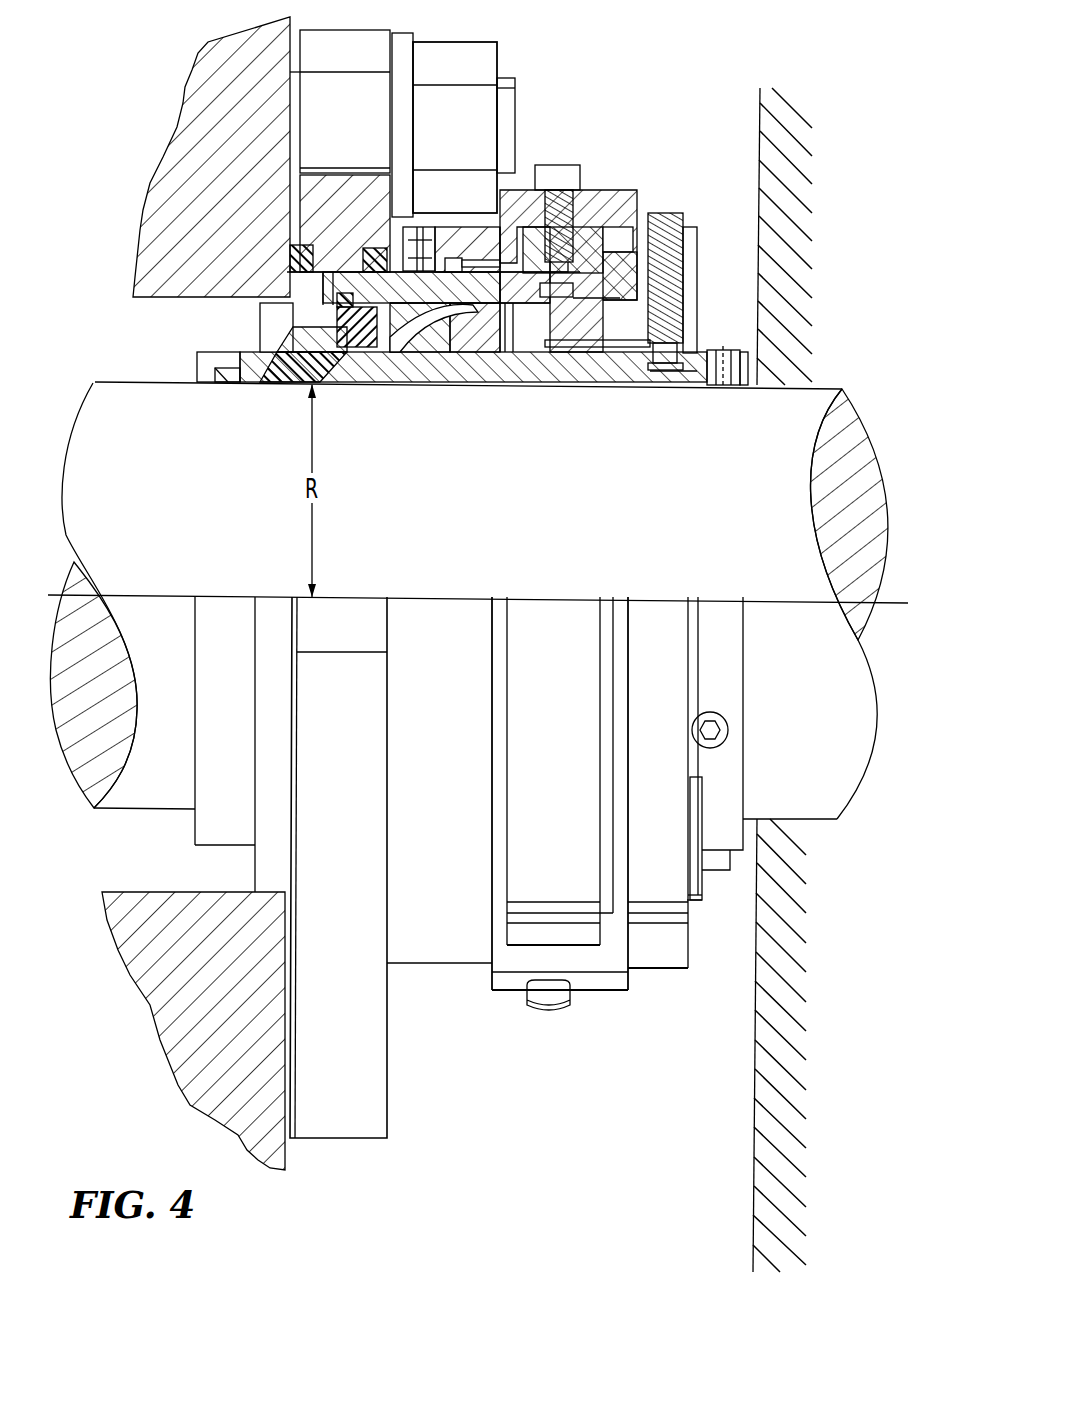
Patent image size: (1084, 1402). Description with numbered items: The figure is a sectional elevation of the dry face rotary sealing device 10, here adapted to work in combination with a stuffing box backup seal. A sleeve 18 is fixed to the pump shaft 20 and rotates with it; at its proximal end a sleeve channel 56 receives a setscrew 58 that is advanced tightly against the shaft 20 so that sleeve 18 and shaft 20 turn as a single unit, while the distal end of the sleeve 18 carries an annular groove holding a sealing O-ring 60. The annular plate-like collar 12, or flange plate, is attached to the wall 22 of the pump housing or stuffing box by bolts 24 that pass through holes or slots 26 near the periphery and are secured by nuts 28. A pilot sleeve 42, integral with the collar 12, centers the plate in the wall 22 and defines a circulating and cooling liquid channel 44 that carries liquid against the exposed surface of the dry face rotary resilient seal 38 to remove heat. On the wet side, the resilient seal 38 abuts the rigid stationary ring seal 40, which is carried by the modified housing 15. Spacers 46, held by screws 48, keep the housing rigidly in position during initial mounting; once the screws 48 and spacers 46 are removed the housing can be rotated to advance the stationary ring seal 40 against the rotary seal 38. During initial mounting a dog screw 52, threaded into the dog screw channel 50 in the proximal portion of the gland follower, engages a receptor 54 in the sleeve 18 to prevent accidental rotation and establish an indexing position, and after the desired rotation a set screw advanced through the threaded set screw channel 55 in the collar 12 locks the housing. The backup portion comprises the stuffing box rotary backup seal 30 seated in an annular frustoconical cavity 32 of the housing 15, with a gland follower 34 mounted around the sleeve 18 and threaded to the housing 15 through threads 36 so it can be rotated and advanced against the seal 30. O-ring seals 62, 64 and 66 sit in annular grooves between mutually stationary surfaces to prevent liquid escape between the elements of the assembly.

The dry face rotary sealing device 10 is at (482, 1030).
The annular plate-like collar 12 is at (312, 181).
The housing 15 is at (404, 386).
The sleeve 18 is at (500, 265).
The pump shaft 20 is at (120, 386).
The wall 22 is at (212, 42).
The bolts 24 is at (517, 78).
The holes or slots 26 is at (383, 627).
The nuts 28 is at (467, 43).
The stuffing box rotary backup seal 30 is at (512, 310).
The annular frustoconical cavity 32 is at (483, 293).
The gland follower 34 is at (585, 346).
The threads 36 is at (612, 300).
The dry face rotary resilient seal 38 is at (279, 385).
The rigid stationary ring seal 40 is at (354, 386).
The pilot sleeve 42 is at (262, 321).
The circulating and cooling liquid channel 44 is at (277, 333).
The spacers 46 is at (637, 190).
The screws 48 is at (580, 165).
The dog screw channel 50 is at (701, 284).
The dog screw 52 is at (687, 221).
The receptor 54 is at (665, 378).
The threaded set screw channel 55 is at (422, 237).
The sleeve channel 56 is at (721, 350).
The setscrew 58 is at (728, 723).
The sealing O-ring 60 is at (230, 385).
The O-ring seal 62 is at (372, 255).
The O-ring seal 64 is at (303, 257).
The O-ring seal 66 is at (342, 297).